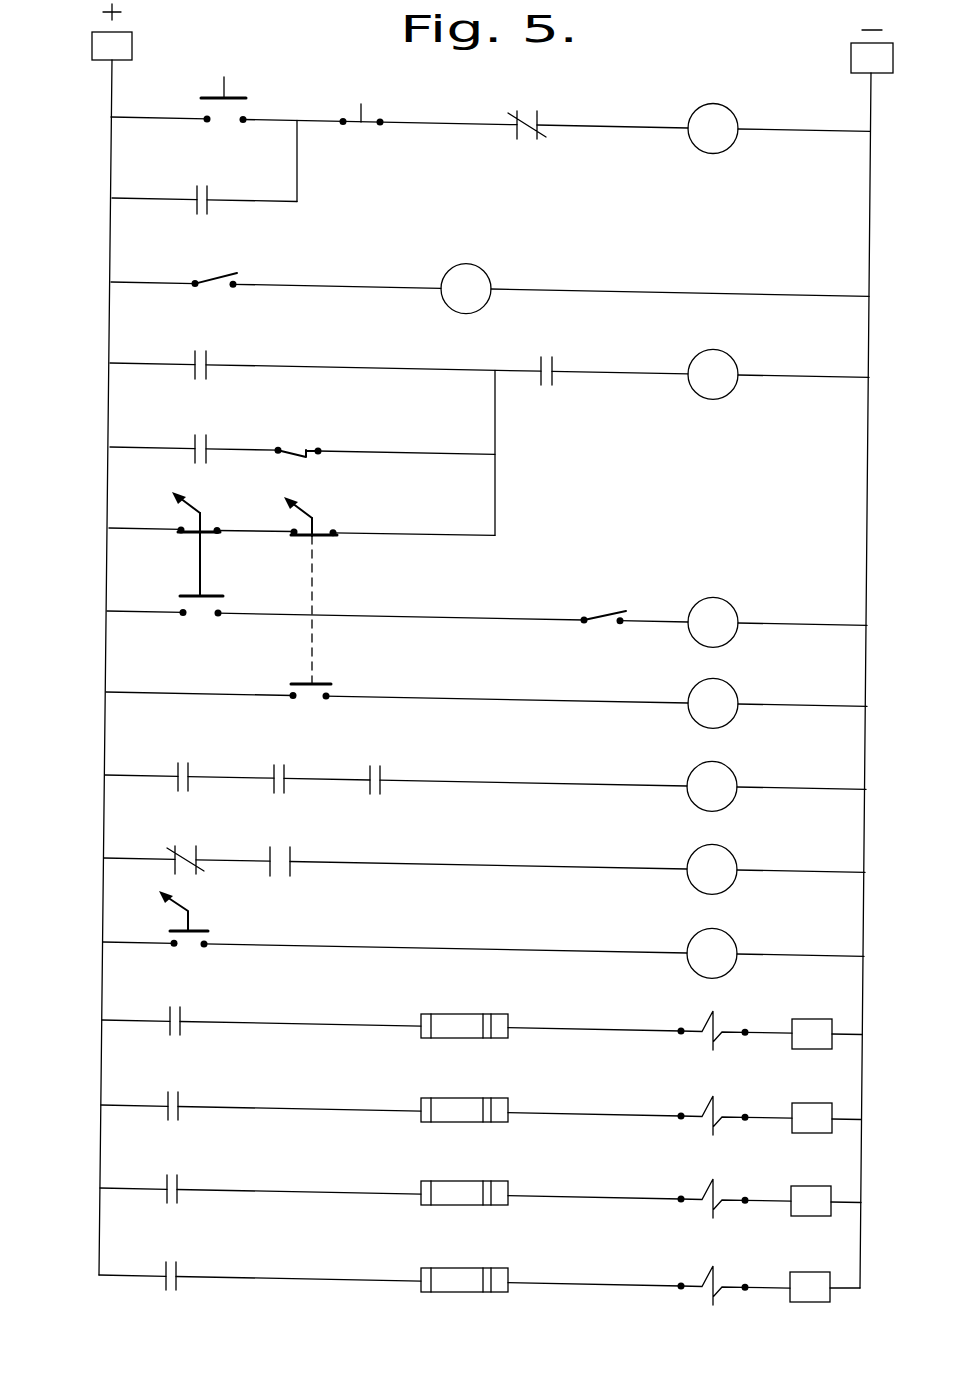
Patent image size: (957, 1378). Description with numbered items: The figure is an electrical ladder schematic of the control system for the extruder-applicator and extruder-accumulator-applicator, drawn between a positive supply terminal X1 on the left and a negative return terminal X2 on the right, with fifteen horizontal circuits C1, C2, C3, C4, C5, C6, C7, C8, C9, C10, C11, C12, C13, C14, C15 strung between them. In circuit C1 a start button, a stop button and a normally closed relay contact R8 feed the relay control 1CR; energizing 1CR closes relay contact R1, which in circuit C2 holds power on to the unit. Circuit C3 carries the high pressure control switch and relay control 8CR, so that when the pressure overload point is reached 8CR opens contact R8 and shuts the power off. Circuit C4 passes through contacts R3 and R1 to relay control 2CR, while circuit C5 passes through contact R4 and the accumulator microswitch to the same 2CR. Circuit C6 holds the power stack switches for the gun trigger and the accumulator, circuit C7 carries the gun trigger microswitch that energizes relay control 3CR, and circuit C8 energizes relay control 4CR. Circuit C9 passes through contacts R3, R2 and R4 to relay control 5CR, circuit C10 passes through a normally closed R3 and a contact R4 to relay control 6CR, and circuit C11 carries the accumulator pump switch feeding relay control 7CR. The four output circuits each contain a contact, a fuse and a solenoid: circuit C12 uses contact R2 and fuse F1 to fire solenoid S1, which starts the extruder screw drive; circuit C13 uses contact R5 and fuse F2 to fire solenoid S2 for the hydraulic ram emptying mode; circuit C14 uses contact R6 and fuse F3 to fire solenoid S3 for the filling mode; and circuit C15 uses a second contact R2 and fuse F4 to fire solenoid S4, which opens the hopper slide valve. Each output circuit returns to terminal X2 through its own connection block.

The power supply terminal X1 is at (112, 46).
The power supply terminal X2 is at (872, 58).
The circuit 1 C1 is at (472, 126).
The circuit 2 C2 is at (185, 187).
The circuit 3 C3 is at (471, 280).
The circuit 4 C4 is at (471, 430).
The circuit 5 C5 is at (284, 434).
The circuit 6 C6 is at (284, 583).
The circuit 7 C7 is at (470, 616).
The circuit 8 C8 is at (470, 703).
The circuit 9 C9 is at (470, 775).
The circuit 10 C10 is at (464, 858).
The circuit 11 C11 is at (463, 934).
The circuit 12 C12 is at (462, 1026).
The circuit 13 C13 is at (462, 1111).
The circuit 14 C14 is at (462, 1194).
The circuit 15 C15 is at (461, 1281).
The relay control for relay 1 1CR is at (713, 129).
The relay control for relay 2 2CR is at (713, 374).
The relay control for relay 3 3CR is at (713, 622).
The relay control for relay 4 4CR is at (713, 703).
The relay control for relay 5 5CR is at (712, 786).
The relay control for relay 6 6CR is at (712, 869).
The relay control for relay 7 7CR is at (712, 953).
The relay control for relay 8 8CR is at (466, 289).
The relay 1 R1 is at (198, 187).
The relay 2 R2 is at (277, 766).
The relay 3 R3 is at (202, 352).
The relay 4 R4 is at (198, 435).
The relay 5 R5 is at (174, 1093).
The relay 6 R6 is at (173, 1176).
The relay 8 R8 is at (527, 113).
The fuse 1 F1 is at (464, 1035).
The fuse 2 F2 is at (464, 1119).
The fuse 3 F3 is at (464, 1203).
The fuse 4 F4 is at (464, 1290).
The solenoid 1 S1 is at (713, 1041).
The solenoid 2 S2 is at (713, 1126).
The solenoid 3 S3 is at (713, 1209).
The solenoid 4 S4 is at (713, 1296).